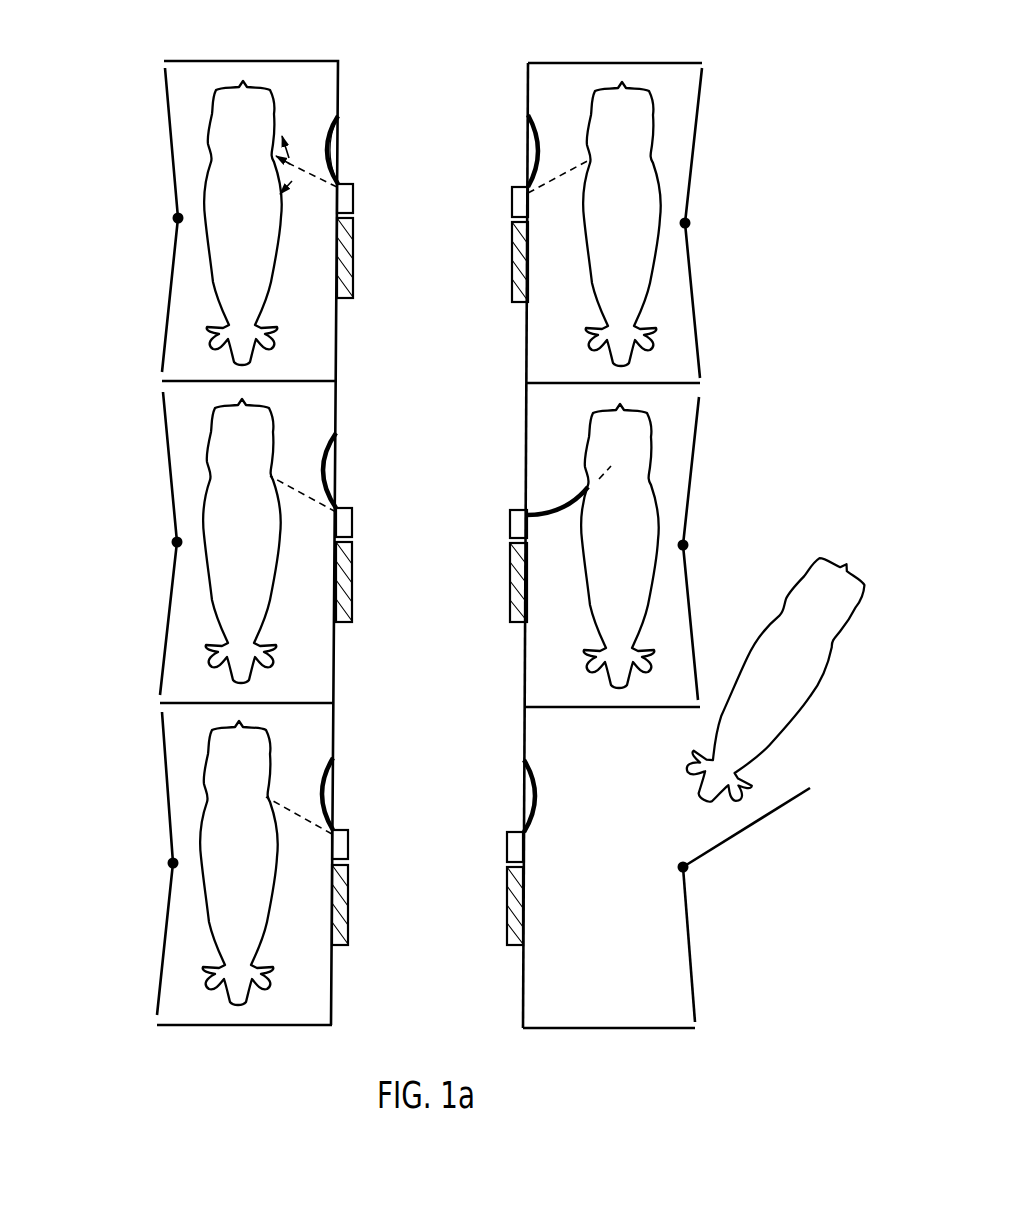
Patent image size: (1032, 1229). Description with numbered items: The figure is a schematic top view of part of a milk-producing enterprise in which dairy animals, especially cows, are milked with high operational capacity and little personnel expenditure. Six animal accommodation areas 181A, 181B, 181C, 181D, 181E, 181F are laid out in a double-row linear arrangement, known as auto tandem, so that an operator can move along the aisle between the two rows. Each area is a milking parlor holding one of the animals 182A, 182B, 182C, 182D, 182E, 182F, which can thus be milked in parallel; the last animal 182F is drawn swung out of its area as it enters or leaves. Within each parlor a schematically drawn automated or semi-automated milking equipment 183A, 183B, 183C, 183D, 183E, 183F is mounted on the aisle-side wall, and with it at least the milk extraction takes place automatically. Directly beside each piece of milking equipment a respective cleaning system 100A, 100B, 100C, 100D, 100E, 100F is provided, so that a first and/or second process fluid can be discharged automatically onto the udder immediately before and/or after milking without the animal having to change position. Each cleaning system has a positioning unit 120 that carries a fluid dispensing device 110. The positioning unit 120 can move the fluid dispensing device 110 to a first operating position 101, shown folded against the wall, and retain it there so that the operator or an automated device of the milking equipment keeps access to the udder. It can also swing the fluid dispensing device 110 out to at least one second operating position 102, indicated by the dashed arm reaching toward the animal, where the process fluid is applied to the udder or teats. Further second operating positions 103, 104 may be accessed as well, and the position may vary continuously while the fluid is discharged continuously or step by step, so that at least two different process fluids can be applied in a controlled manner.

The cleaning system 100A is at (326, 126).
The cleaning system 100B is at (356, 508).
The cleaning system 100C is at (352, 830).
The cleaning system 100D is at (510, 187).
The cleaning system 100E is at (508, 510).
The cleaning system 100F is at (506, 832).
The first operating position 101 is at (328, 134).
The second operating position 102 is at (298, 178).
The second operating position 103 is at (275, 82).
The second operating position 104 is at (289, 158).
The fluid dispensing device 110 is at (340, 122).
The positioning unit 120 is at (354, 201).
The animal accommodation area 181A is at (157, 122).
The animal accommodation area 181B is at (157, 446).
The animal accommodation area 181C is at (155, 768).
The animal accommodation area 181D is at (710, 127).
The animal accommodation area 181E is at (710, 449).
The animal accommodation area 181F is at (703, 968).
The animal 182A is at (268, 212).
The animal 182B is at (268, 537).
The animal 182C is at (265, 859).
The animal 182D is at (647, 218).
The animal 182E is at (645, 539).
The animal 182F is at (812, 672).
The milking equipment 183A is at (357, 282).
The milking equipment 183B is at (353, 605).
The milking equipment 183C is at (349, 926).
The milking equipment 183D is at (508, 282).
The milking equipment 183E is at (508, 606).
The milking equipment 183F is at (505, 926).